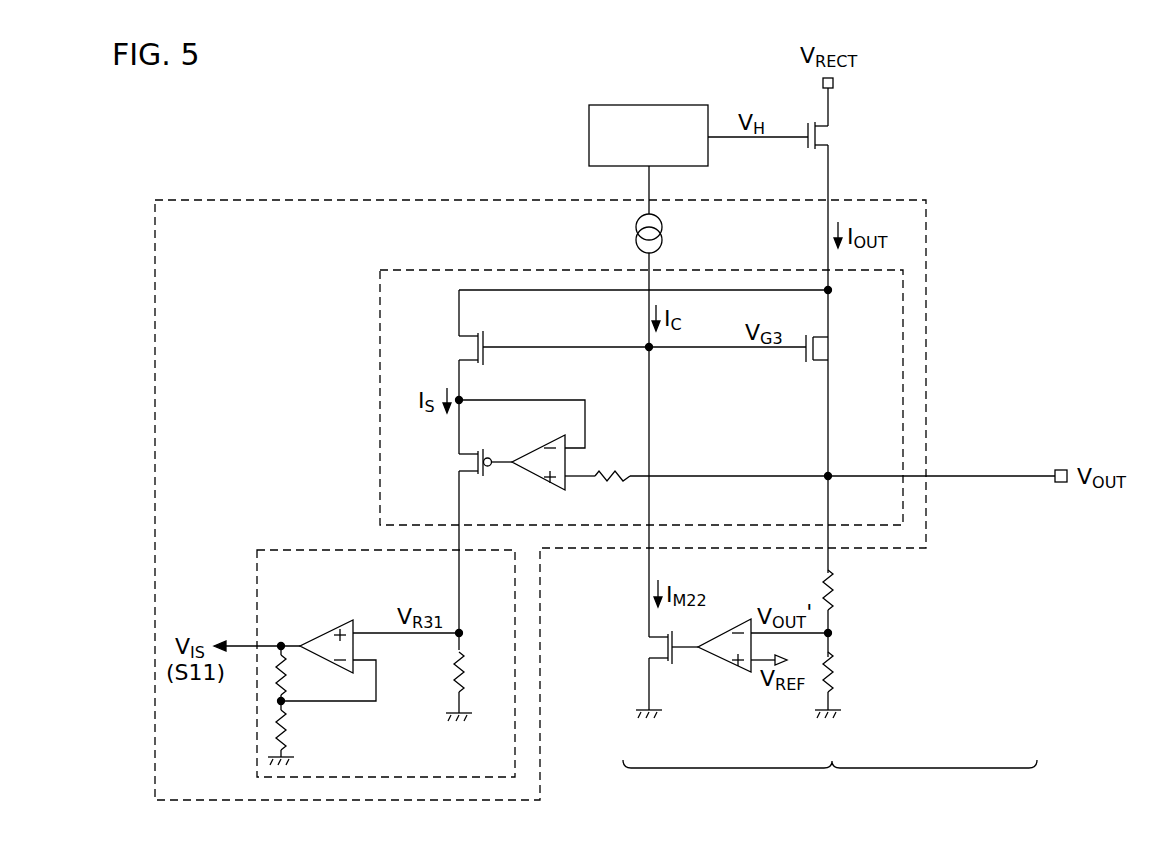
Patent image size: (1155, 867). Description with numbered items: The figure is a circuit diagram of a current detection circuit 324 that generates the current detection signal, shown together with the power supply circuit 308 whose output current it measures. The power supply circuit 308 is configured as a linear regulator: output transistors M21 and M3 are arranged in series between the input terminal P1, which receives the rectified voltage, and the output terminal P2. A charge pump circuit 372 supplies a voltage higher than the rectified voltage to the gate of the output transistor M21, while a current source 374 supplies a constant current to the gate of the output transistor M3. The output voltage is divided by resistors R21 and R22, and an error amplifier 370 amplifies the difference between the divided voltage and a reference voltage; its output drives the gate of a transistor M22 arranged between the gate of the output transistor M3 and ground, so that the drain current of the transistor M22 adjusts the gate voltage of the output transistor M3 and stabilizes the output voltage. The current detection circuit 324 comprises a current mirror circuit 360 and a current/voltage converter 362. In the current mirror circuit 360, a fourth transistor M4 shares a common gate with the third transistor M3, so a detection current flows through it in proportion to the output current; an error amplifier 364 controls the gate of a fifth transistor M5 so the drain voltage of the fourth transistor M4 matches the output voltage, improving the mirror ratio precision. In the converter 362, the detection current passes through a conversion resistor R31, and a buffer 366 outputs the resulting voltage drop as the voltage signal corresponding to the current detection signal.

The power supply circuit 308 is at (830, 785).
The current detection circuit 324 is at (330, 800).
The current mirror circuit 360 is at (378, 406).
The current/voltage (I/V) converter 362 is at (287, 550).
The error amplifier 364 is at (527, 478).
The buffer (or otherwise amplifier) 366 is at (318, 634).
The error amplifier 370 is at (730, 664).
The charge pump circuit 372 is at (658, 105).
The current source 374 is at (665, 234).
The output transistor M21 is at (833, 133).
The third transistor M3 is at (833, 347).
The fourth transistor M4 is at (456, 349).
The fifth transistor M5 is at (456, 464).
The transistor M22 is at (646, 648).
The resistor R21 is at (835, 593).
The resistor R22 is at (835, 675).
The conversion resistor R31 is at (447, 673).
The input terminal P1 is at (820, 86).
The output terminal P2 is at (1060, 484).